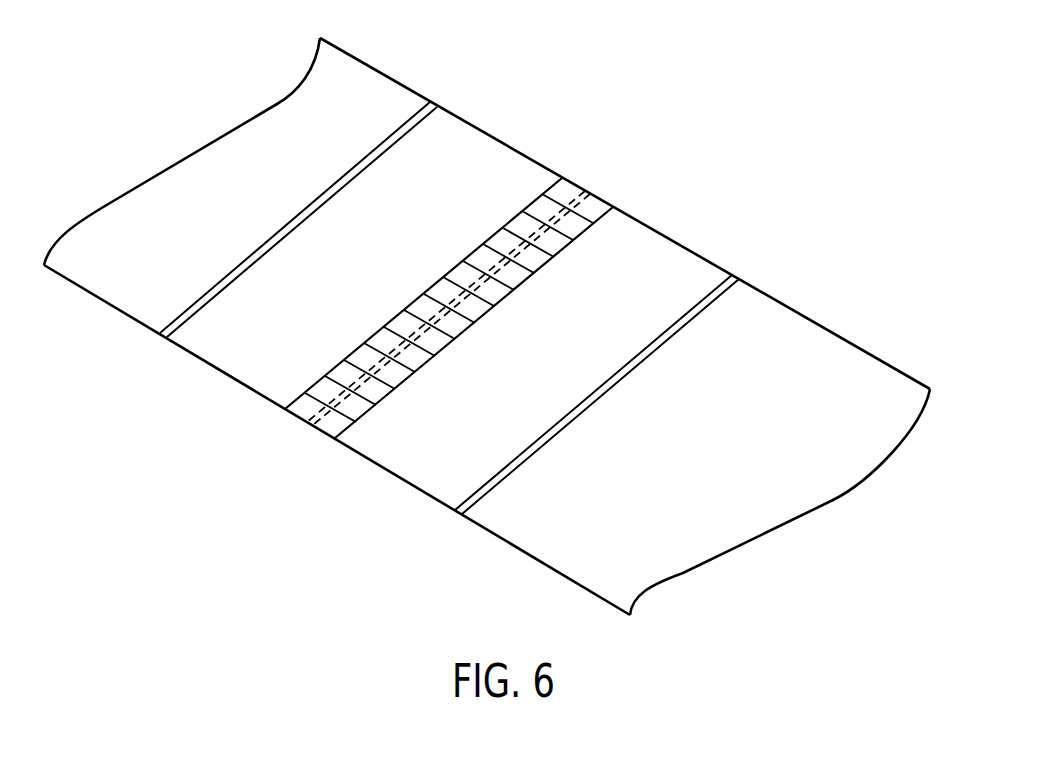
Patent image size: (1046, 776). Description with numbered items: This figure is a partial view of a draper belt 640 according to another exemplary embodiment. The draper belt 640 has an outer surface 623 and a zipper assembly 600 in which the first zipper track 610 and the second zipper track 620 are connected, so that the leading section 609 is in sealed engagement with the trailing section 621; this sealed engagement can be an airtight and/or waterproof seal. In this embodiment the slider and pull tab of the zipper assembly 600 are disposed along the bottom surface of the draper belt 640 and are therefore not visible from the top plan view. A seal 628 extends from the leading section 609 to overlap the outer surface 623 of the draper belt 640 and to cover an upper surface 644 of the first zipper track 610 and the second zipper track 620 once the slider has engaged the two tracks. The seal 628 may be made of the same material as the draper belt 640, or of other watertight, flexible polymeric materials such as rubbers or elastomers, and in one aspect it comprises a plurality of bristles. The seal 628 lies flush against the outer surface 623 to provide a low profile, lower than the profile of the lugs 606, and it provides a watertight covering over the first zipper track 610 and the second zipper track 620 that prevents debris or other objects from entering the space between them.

The zipper assembly 600 is at (557, 82).
The lugs 606 is at (387, 137).
The leading section 609 is at (787, 333).
The first zipper track 610 is at (590, 234).
The second zipper track 620 is at (559, 207).
The trailing section 621 is at (228, 172).
The outer surface 623 is at (740, 530).
The seal 628 is at (520, 273).
The draper belt 640 is at (915, 510).
The upper surface 644 is at (290, 428).